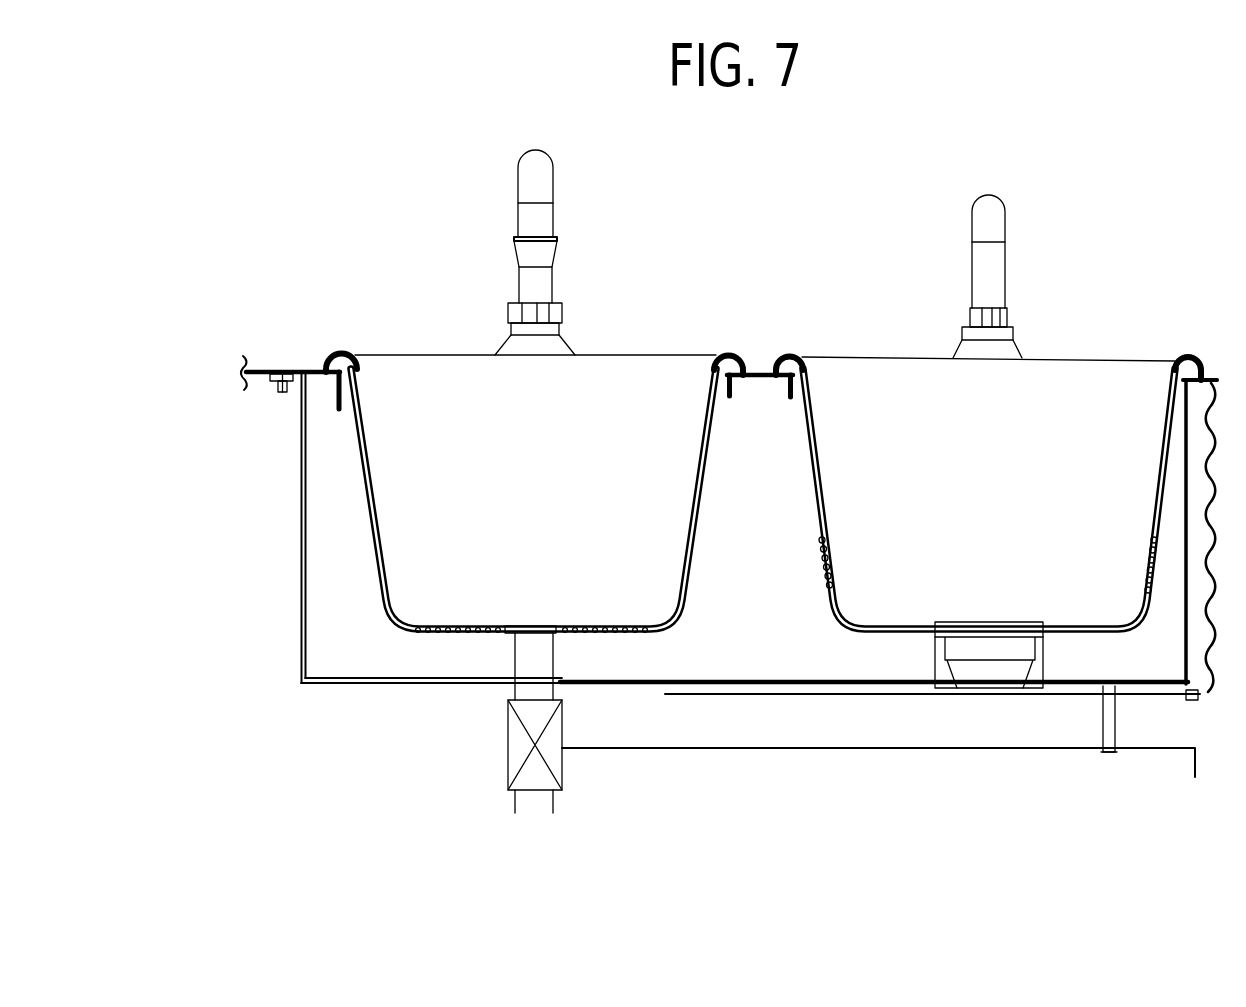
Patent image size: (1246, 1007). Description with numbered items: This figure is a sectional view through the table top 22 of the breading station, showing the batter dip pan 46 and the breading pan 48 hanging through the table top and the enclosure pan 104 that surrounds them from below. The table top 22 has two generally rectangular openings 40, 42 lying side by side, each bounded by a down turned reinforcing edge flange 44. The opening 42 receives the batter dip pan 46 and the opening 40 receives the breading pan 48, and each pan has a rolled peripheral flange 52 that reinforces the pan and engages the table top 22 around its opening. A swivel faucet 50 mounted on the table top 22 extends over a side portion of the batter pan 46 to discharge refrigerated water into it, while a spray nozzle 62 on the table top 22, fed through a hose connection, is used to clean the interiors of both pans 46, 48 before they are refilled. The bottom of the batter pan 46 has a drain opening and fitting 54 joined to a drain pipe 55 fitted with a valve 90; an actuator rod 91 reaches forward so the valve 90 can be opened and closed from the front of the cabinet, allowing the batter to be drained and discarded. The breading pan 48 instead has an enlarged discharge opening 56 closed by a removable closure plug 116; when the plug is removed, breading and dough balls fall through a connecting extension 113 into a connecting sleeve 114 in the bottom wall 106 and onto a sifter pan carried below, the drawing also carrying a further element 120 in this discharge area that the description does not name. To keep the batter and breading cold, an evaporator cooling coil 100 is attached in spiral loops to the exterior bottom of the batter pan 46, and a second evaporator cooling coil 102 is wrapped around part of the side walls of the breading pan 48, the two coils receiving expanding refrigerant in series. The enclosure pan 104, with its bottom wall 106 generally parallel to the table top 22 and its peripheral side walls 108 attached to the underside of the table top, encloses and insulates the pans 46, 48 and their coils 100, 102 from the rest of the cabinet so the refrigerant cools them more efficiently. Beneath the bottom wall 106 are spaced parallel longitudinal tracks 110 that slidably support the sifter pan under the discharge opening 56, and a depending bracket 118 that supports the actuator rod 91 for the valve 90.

The table top 22 is at (255, 367).
The opening 40 is at (794, 405).
The opening 42 is at (357, 425).
The down turned reinforcing edge flange 44 is at (730, 405).
The batter dip pan 46 is at (617, 377).
The breading pan 48 is at (995, 483).
The swivel faucet 50 is at (545, 185).
The rolled peripheral flange 52 is at (335, 350).
The drain opening and fitting 54 is at (549, 626).
The drain pipe 55 is at (518, 658).
The enlarged discharge opening 56 is at (1037, 650).
The spray nozzle 62 is at (1000, 215).
The valve 90 is at (513, 753).
The actuator rod 91 is at (1052, 752).
The evaporator cooling coil 100 is at (628, 638).
The evaporator cooling coil 102 is at (823, 590).
The enclosure pan 104 is at (286, 666).
The bottom wall 106 is at (335, 682).
The peripheral side walls 108 is at (298, 540).
The longitudinal tracks 110 is at (820, 698).
The connecting extension 113 is at (960, 645).
The connecting sleeve 114 is at (1032, 668).
The closure plug 116 is at (965, 622).
The bracket 118 is at (1115, 727).
The drain fitting 120 is at (987, 685).